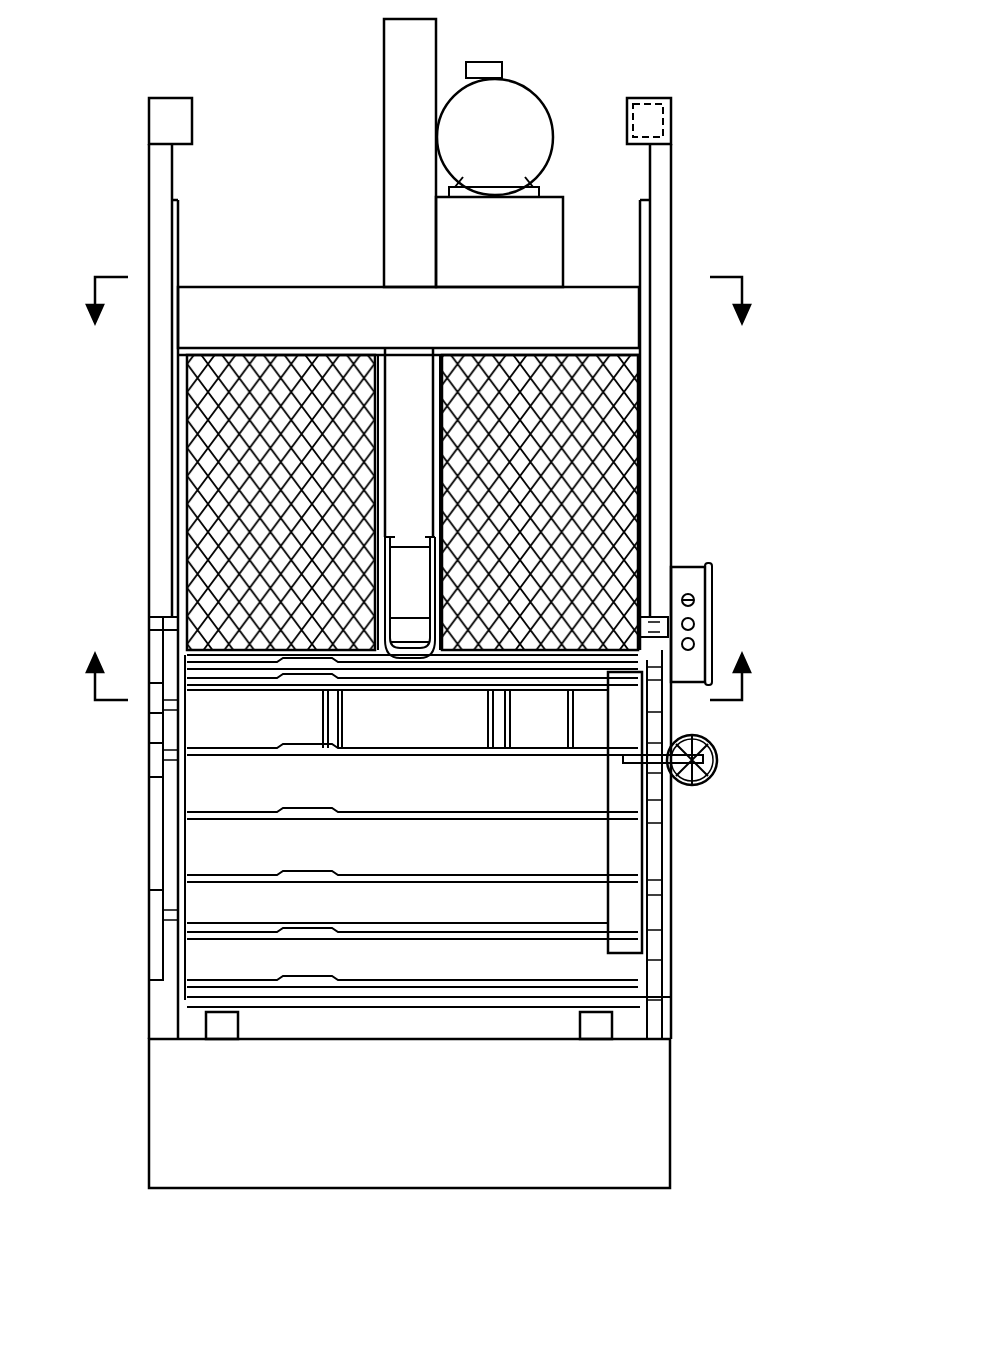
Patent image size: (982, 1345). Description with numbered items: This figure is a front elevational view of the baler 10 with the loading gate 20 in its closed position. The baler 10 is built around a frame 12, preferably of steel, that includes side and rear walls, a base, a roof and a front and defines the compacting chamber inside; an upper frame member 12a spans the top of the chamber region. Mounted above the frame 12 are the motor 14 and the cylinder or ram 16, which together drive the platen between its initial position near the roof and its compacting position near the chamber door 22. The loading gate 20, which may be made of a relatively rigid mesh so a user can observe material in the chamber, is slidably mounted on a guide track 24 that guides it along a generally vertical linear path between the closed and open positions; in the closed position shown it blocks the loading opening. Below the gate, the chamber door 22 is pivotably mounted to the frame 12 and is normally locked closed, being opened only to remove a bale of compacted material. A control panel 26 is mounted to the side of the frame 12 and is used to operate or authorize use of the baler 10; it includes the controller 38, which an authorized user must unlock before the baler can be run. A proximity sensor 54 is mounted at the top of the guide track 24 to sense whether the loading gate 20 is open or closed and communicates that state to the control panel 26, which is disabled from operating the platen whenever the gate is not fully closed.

The baler 10 is at (738, 211).
The frame 12 is at (222, 1117).
The upper frame member 12a is at (312, 300).
The motor 14 is at (518, 100).
The cylinder or ram 16 is at (395, 73).
The loading gate 20 is at (217, 495).
The chamber door 22 is at (570, 912).
The guide track 24 is at (158, 227).
The control panel 26 is at (692, 548).
The controller 38 is at (712, 600).
The proximity sensor 54 is at (672, 113).